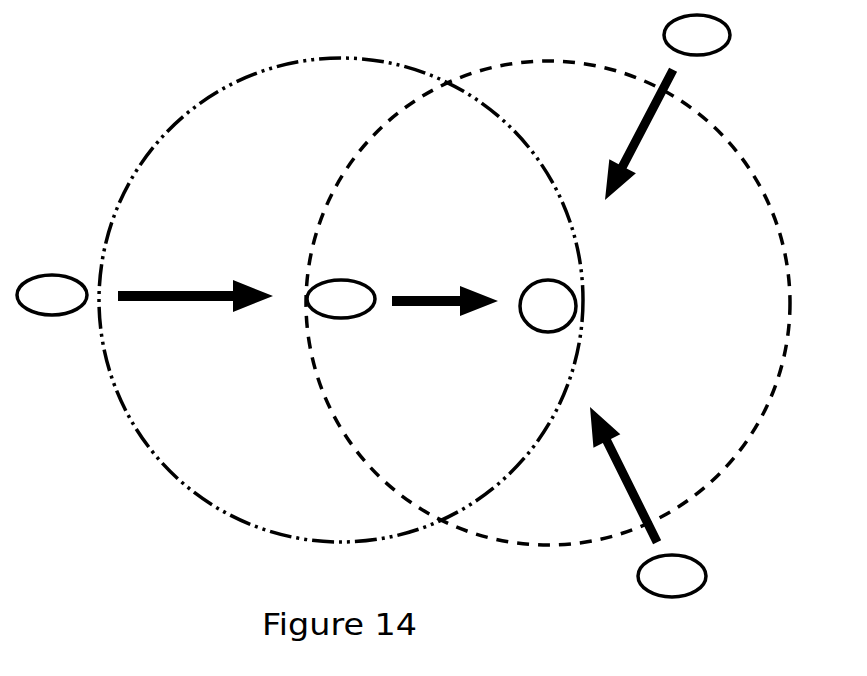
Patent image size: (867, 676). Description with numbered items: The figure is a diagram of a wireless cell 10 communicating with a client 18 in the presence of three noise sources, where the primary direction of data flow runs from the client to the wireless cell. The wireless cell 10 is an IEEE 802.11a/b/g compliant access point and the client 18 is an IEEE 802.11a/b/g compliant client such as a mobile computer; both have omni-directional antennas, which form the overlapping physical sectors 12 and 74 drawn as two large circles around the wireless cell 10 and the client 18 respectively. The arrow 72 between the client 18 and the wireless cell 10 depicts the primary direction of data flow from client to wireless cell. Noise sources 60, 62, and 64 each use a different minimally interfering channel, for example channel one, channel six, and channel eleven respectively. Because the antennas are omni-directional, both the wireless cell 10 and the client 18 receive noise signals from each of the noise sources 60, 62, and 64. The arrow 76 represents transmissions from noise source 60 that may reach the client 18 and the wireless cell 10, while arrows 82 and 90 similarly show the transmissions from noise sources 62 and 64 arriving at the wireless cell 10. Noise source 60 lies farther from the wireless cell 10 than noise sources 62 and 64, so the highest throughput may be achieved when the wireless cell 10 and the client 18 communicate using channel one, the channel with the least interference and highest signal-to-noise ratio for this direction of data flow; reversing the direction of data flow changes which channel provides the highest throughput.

The wireless cell 10 is at (563, 319).
The physical sector 12 is at (477, 73).
The client 18 is at (356, 312).
The noise source 60 is at (67, 308).
The noise source 62 is at (712, 48).
The noise source 64 is at (687, 589).
The arrow 72 is at (432, 297).
The physical sector 74 is at (215, 95).
The arrows 76 is at (191, 290).
The transfer path from second source 82 is at (633, 136).
The transfer path from third source 90 is at (633, 471).